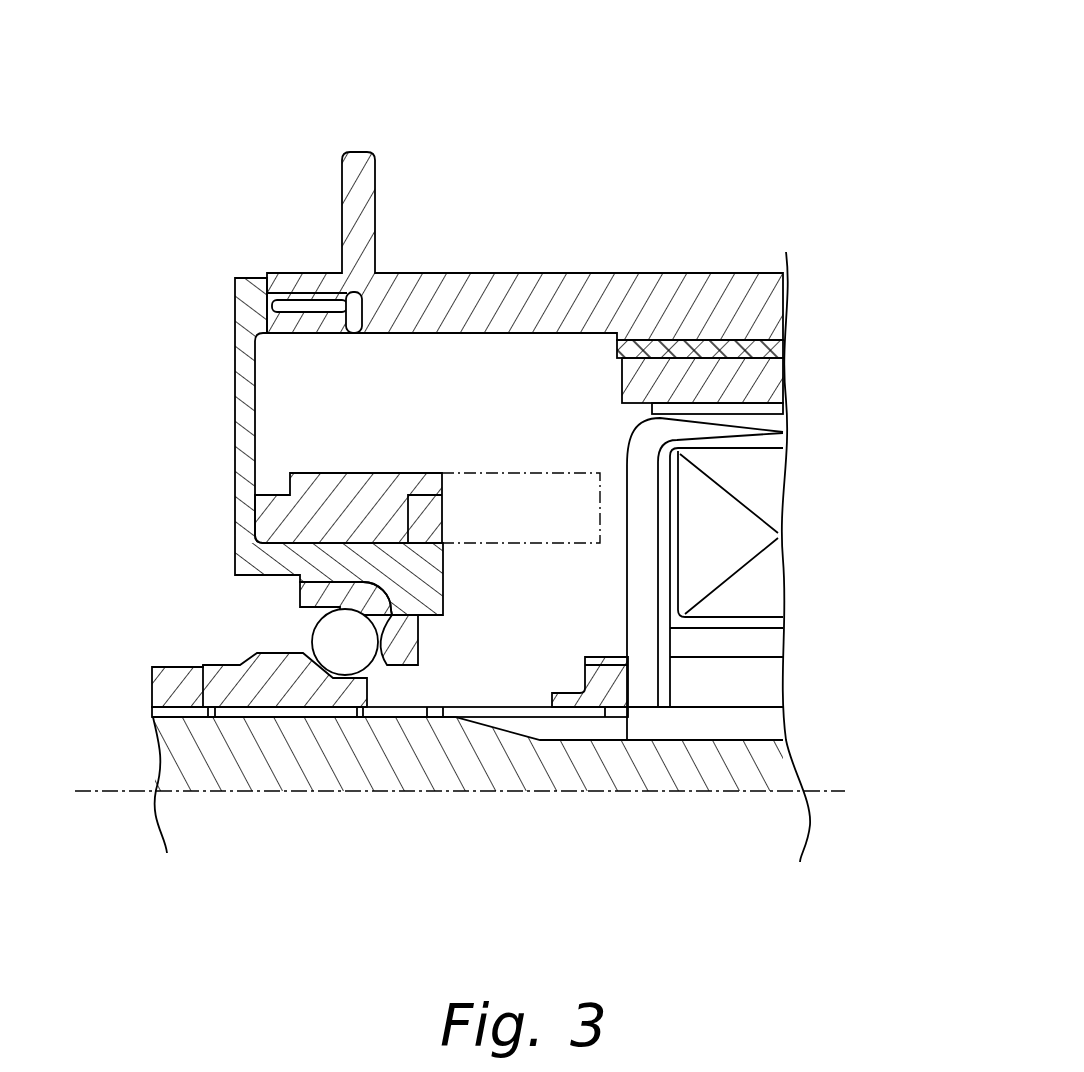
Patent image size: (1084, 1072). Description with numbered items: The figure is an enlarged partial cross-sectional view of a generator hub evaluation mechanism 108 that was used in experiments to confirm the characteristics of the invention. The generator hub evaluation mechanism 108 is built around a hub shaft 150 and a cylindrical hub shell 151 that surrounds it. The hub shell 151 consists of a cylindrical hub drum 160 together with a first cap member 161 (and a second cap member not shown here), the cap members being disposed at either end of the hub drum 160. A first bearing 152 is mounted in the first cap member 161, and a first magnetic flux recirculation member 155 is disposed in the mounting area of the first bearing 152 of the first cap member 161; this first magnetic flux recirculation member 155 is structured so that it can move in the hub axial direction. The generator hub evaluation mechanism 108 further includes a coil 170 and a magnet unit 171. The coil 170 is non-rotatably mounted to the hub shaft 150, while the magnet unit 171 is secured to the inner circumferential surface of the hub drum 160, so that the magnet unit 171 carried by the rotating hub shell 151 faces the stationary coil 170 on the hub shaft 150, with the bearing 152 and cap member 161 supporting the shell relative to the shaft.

The generator hub evaluation mechanism 108 is at (570, 162).
The hub shaft 150 is at (332, 772).
The cylindrical hub shell 151 is at (640, 258).
The first bearing 152 is at (328, 643).
The first magnetic flux recirculation member 155 is at (378, 487).
The cylindrical hub drum 160 is at (452, 292).
The first cap member 161 is at (247, 335).
The coil 170 is at (672, 580).
The magnet unit 171 is at (753, 373).